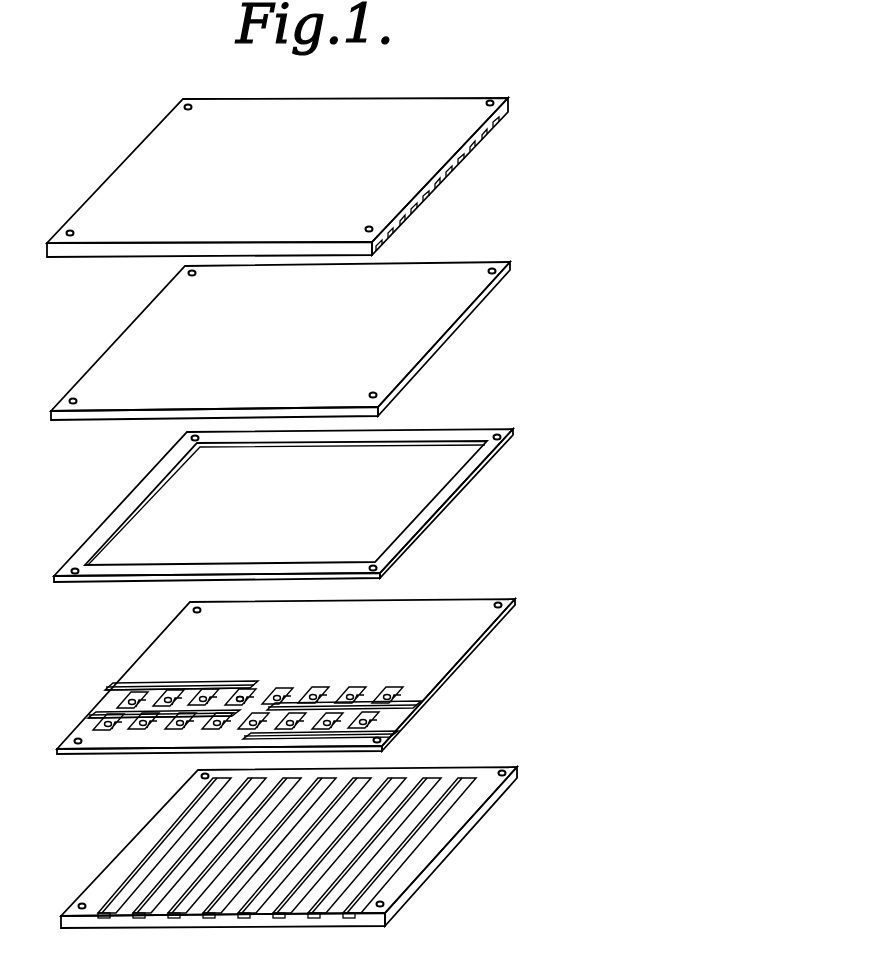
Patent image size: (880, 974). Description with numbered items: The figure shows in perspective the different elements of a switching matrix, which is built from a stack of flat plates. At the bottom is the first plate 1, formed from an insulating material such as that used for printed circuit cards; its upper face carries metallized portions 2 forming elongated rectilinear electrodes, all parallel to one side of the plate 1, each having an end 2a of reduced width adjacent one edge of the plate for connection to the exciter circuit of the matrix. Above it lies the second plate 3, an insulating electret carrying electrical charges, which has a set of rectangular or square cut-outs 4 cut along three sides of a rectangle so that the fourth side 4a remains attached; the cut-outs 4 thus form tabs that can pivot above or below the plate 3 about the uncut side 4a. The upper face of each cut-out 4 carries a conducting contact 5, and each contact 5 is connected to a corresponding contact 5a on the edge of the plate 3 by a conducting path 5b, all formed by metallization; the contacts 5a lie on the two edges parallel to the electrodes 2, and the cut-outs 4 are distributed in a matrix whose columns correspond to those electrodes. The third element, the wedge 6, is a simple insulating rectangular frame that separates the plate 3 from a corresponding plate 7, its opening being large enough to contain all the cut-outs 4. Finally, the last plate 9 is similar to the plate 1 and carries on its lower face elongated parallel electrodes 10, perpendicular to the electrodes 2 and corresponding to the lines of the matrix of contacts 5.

The first plate 1 is at (457, 840).
The metallized portions 2 is at (433, 785).
The end of reduced width 2a is at (312, 913).
The second plate 3 is at (480, 638).
The cut-outs 4 is at (192, 715).
The uncut side 4a is at (214, 701).
The conducting contact 5 is at (230, 715).
The contact 5a is at (97, 707).
The conducting path 5b is at (100, 713).
The wedge 6 is at (463, 477).
The plate 7 is at (447, 320).
The last plate 9 is at (433, 103).
The electrodes 10 is at (425, 206).